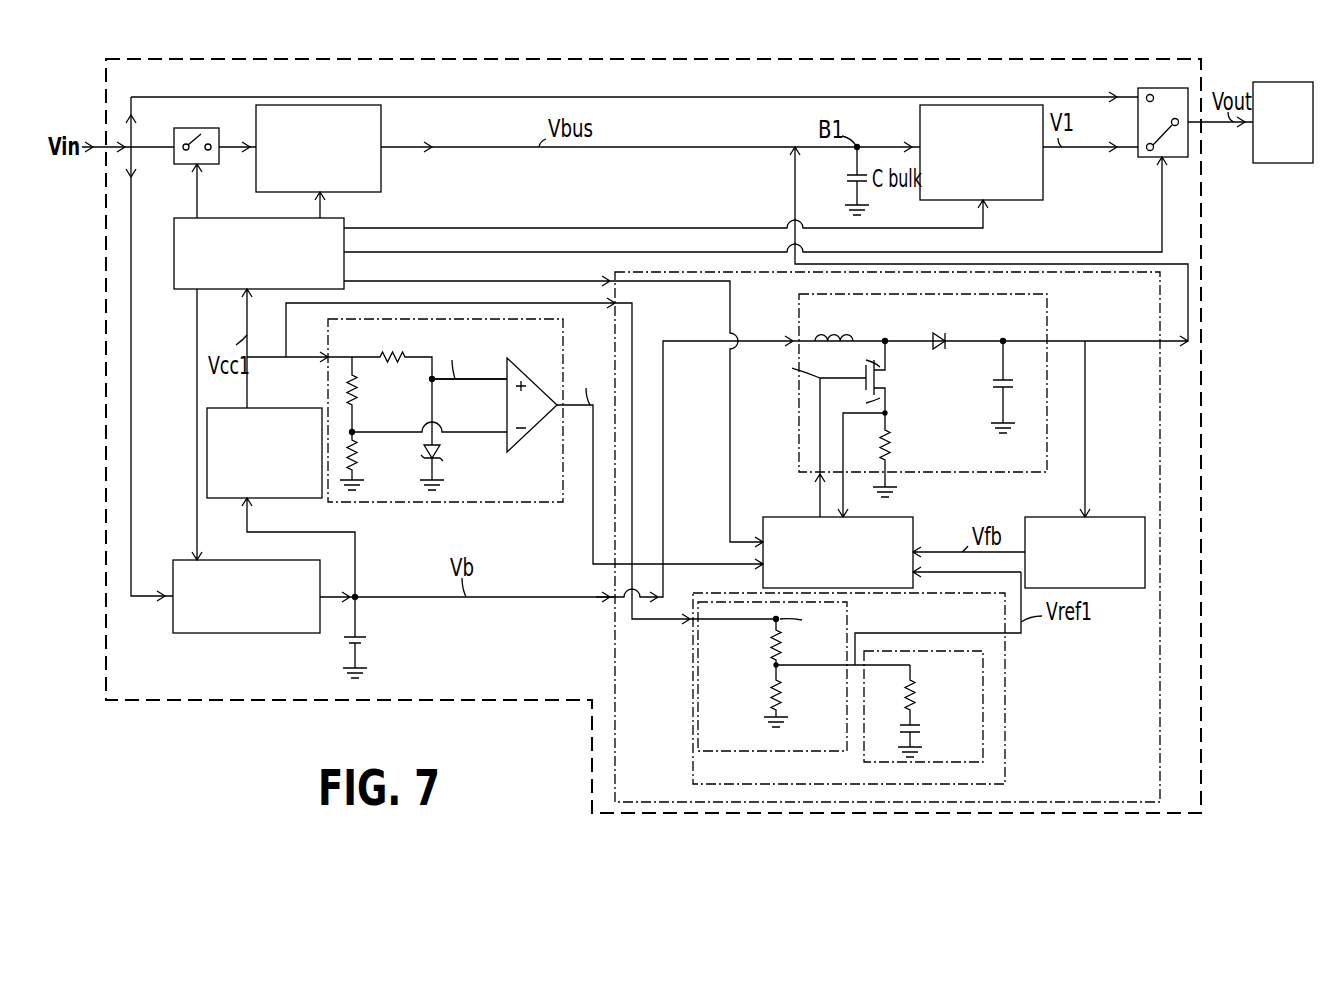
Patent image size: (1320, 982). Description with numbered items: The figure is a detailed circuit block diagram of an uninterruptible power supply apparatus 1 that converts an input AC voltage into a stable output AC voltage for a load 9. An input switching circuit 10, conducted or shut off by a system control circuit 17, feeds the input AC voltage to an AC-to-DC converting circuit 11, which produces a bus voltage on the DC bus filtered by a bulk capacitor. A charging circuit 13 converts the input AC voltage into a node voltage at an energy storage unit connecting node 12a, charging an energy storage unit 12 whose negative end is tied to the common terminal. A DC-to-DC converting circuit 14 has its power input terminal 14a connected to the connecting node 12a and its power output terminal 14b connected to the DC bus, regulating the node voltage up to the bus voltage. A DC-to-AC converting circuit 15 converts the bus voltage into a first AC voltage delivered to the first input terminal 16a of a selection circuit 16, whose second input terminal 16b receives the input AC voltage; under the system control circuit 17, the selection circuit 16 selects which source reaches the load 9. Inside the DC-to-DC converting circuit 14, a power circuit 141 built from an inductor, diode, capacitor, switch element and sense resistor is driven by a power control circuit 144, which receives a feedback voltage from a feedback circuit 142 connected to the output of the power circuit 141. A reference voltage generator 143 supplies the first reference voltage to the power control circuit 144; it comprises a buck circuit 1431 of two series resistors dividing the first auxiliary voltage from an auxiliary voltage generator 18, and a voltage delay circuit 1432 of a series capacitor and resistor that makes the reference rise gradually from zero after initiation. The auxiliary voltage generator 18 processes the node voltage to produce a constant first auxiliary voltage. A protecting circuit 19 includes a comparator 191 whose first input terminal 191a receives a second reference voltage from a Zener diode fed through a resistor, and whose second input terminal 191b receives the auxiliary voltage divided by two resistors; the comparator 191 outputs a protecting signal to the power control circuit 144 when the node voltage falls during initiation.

The uninterruptible power supply apparatus 1 is at (405, 59).
The load 9 is at (1283, 82).
The input switching circuit 10 is at (205, 135).
The AC-to-DC converting circuit 11 is at (381, 135).
The energy storage unit 12 is at (368, 637).
The energy storage unit connecting node 12a is at (360, 595).
The charging circuit 13 is at (197, 633).
The DC-to-DC converting circuit 14 is at (615, 662).
The power input terminal 14a is at (610, 594).
The power output terminal 14b is at (1165, 343).
The DC-to-AC converting circuit 15 is at (1043, 168).
The selection circuit 16 is at (1135, 107).
The first input terminal 16a is at (1143, 145).
The second input terminal 16b is at (1142, 94).
The system control circuit 17 is at (215, 218).
The auxiliary voltage generator 18 is at (275, 408).
The protecting circuit 19 is at (545, 444).
The power circuit 141 is at (1047, 326).
The feedback circuit 142 is at (1098, 517).
The reference voltage generator 143 is at (860, 688).
The power control circuit 144 is at (913, 535).
The comparator 191 is at (530, 430).
The first input terminal 191a is at (489, 378).
The second input terminal 191b is at (494, 435).
The buck circuit 1431 is at (698, 680).
The voltage delay circuit 1432 is at (983, 676).